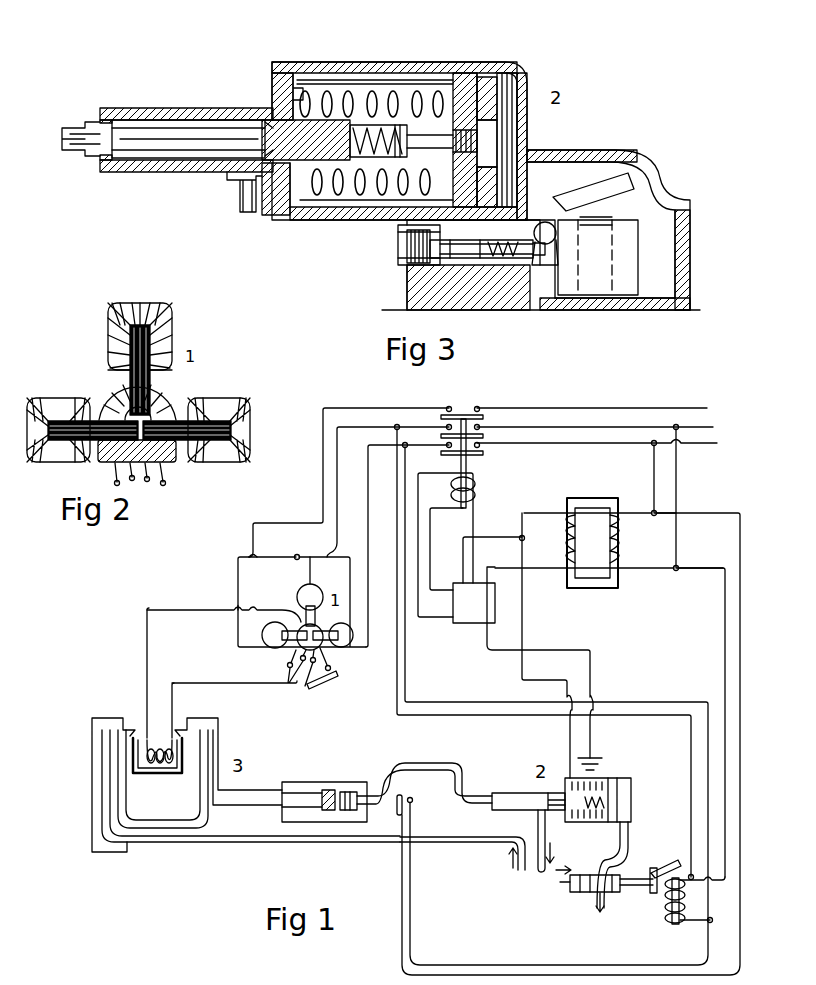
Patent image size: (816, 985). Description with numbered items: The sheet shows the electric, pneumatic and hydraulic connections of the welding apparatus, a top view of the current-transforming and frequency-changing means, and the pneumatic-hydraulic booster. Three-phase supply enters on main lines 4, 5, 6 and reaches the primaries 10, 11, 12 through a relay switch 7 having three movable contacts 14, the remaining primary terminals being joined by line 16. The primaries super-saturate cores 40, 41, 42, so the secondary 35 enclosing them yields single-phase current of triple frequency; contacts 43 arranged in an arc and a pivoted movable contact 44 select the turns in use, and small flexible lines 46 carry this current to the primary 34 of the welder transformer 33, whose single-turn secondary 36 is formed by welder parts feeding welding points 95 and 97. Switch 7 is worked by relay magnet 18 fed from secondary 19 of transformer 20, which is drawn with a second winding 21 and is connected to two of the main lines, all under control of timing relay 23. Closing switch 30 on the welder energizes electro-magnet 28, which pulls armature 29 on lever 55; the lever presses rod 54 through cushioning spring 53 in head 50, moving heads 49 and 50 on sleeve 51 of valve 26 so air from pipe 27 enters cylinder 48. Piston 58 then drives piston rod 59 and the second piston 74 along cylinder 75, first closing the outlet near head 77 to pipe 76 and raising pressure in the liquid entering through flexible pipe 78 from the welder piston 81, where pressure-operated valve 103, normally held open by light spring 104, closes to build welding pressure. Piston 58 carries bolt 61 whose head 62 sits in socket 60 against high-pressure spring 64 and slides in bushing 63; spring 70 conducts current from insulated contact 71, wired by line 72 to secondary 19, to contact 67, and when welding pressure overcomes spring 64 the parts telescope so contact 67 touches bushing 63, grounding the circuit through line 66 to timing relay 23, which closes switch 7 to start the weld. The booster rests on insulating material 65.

In FIG. 1, the main line 4 is at (708, 444).
In FIG. 1, the main line 5 is at (708, 428).
In FIG. 1, the main line 6 is at (706, 408).
In FIG. 1, the relay switch 7 is at (470, 455).
In FIG. 2, the primary 10 is at (40, 460).
In FIG. 1, the primary 10 is at (272, 645).
In FIG. 2, the primary 11 is at (118, 320).
In FIG. 1, the primary 11 is at (310, 590).
In FIG. 2, the primary 12 is at (246, 403).
In FIG. 1, the primary 12 is at (345, 627).
In FIG. 1, the movable contacts 14 is at (441, 417).
In FIG. 1, the line 16 is at (238, 585).
In FIG. 1, the solenoid or relay magnet 18 is at (476, 487).
In FIG. 1, the secondary 19 is at (560, 541).
In FIG. 1, the transformer 20 is at (596, 506).
In FIG. 1, the secondary winding 21 is at (620, 530).
In FIG. 1, the timing relay 23 is at (477, 615).
In FIG. 3, the valve 26 is at (463, 266).
In FIG. 1, the valve 26 is at (610, 890).
In FIG. 3, the pipe 27 is at (392, 250).
In FIG. 1, the pipe 27 is at (566, 884).
In FIG. 3, the electro-magnet 28 is at (625, 278).
In FIG. 1, the electro-magnet 28 is at (670, 925).
In FIG. 3, the armature 29 is at (627, 185).
In FIG. 1, the armature 29 is at (665, 868).
In FIG. 1, the switch 30 is at (413, 801).
In FIG. 1, the transformer 33 is at (158, 740).
In FIG. 1, the primary 34 is at (164, 770).
In FIG. 2, the secondary 35 is at (177, 463).
In FIG. 1, the secondary 35 is at (330, 652).
In FIG. 1, the secondary 36 is at (140, 776).
In FIG. 2, the core 40 is at (170, 316).
In FIG. 2, the core 41 is at (212, 462).
In FIG. 2, the core 42 is at (93, 452).
In FIG. 2, the contacts 43 is at (148, 483).
In FIG. 1, the contacts 43 is at (288, 684).
In FIG. 1, the movable contact 44 is at (328, 684).
In FIG. 1, the lines 46 is at (188, 612).
In FIG. 3, the cylinder 48 is at (522, 66).
In FIG. 1, the cylinder 48 is at (631, 805).
In FIG. 3, the head 49 is at (432, 248).
In FIG. 3, the head 50 is at (540, 222).
In FIG. 3, the sleeve 51 is at (455, 272).
In FIG. 3, the spring 53 is at (506, 266).
In FIG. 3, the rod 54 is at (537, 266).
In FIG. 3, the lever 55 is at (536, 205).
In FIG. 3, the piston 58 is at (470, 85).
In FIG. 3, the piston rod 59 is at (338, 118).
In FIG. 1, the piston rod 59 is at (556, 810).
In FIG. 3, the socket 60 is at (395, 95).
In FIG. 3, the bolt 61 is at (430, 70).
In FIG. 3, the head 62 is at (408, 95).
In FIG. 3, the bushing 63 is at (446, 100).
In FIG. 3, the spring 64 is at (366, 88).
In FIG. 3, the insulating material 65 is at (694, 310).
In FIG. 1, the line 66 is at (592, 673).
In FIG. 3, the contact 67 is at (500, 75).
In FIG. 3, the spring 70 is at (304, 97).
In FIG. 3, the contact 71 is at (292, 90).
In FIG. 1, the line 72 is at (522, 676).
In FIG. 3, the second piston 74 is at (266, 150).
In FIG. 3, the cylinder 75 is at (166, 172).
In FIG. 3, the pipe 76 is at (238, 205).
In FIG. 3, the head 77 is at (276, 217).
In FIG. 3, the flexible pipe 78 is at (80, 153).
In FIG. 1, the flexible pipe 78 is at (465, 778).
In FIG. 1, the piston 81 is at (298, 790).
In FIG. 1, the welding point 95 is at (190, 724).
In FIG. 1, the welding point 97 is at (123, 722).
In FIG. 1, the pressure-operated valve 103 is at (348, 792).
In FIG. 1, the spring 104 is at (328, 790).